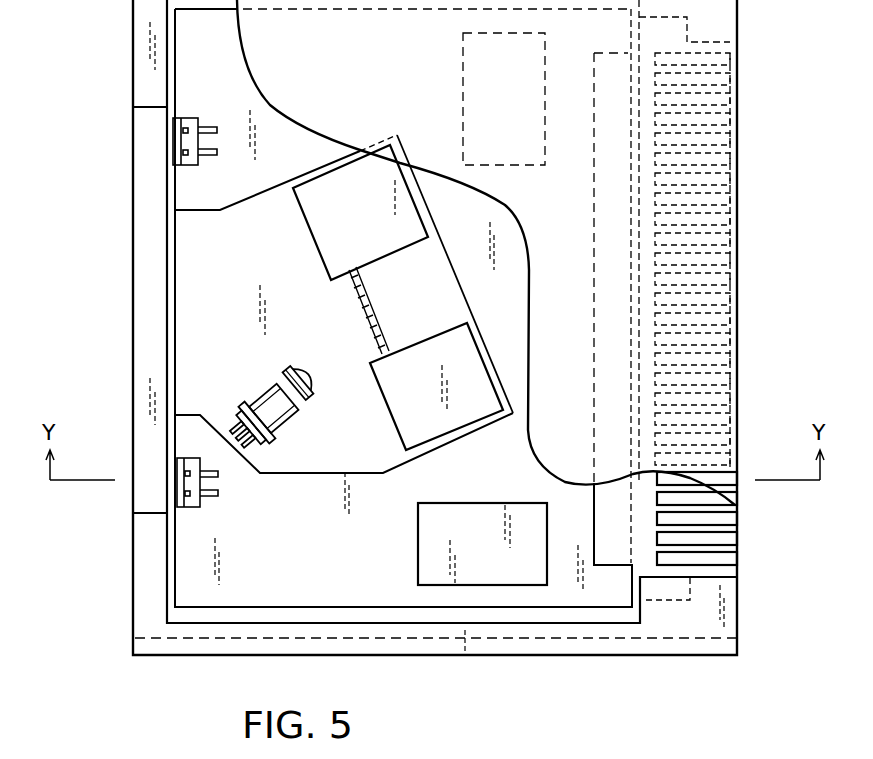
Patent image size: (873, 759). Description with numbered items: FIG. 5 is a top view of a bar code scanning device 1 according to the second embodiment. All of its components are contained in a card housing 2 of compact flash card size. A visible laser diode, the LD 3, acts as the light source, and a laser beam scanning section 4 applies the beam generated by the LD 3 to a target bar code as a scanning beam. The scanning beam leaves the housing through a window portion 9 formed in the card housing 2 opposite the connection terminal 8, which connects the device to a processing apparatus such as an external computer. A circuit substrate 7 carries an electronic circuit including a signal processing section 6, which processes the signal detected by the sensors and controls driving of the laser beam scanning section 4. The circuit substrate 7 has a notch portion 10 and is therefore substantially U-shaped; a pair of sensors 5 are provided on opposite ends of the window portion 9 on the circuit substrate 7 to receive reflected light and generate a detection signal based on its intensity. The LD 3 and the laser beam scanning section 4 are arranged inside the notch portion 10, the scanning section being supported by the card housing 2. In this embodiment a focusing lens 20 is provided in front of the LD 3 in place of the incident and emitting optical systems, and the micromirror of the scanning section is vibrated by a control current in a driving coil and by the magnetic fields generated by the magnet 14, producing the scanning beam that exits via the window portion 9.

The bar code scanning device 1 is at (522, 668).
The card housing 2 is at (683, 623).
The visible laser diode 3 is at (260, 410).
The laser beam scanning section 4 is at (296, 268).
The sensors 5 is at (173, 143).
The signal processing section 6 is at (483, 115).
The circuit substrate 7 is at (200, 597).
The connection terminal 8 is at (705, 290).
The window portion 9 is at (145, 493).
The notch portion 10 is at (188, 300).
The magnet 14 is at (320, 200).
The focusing lens 20 is at (315, 400).